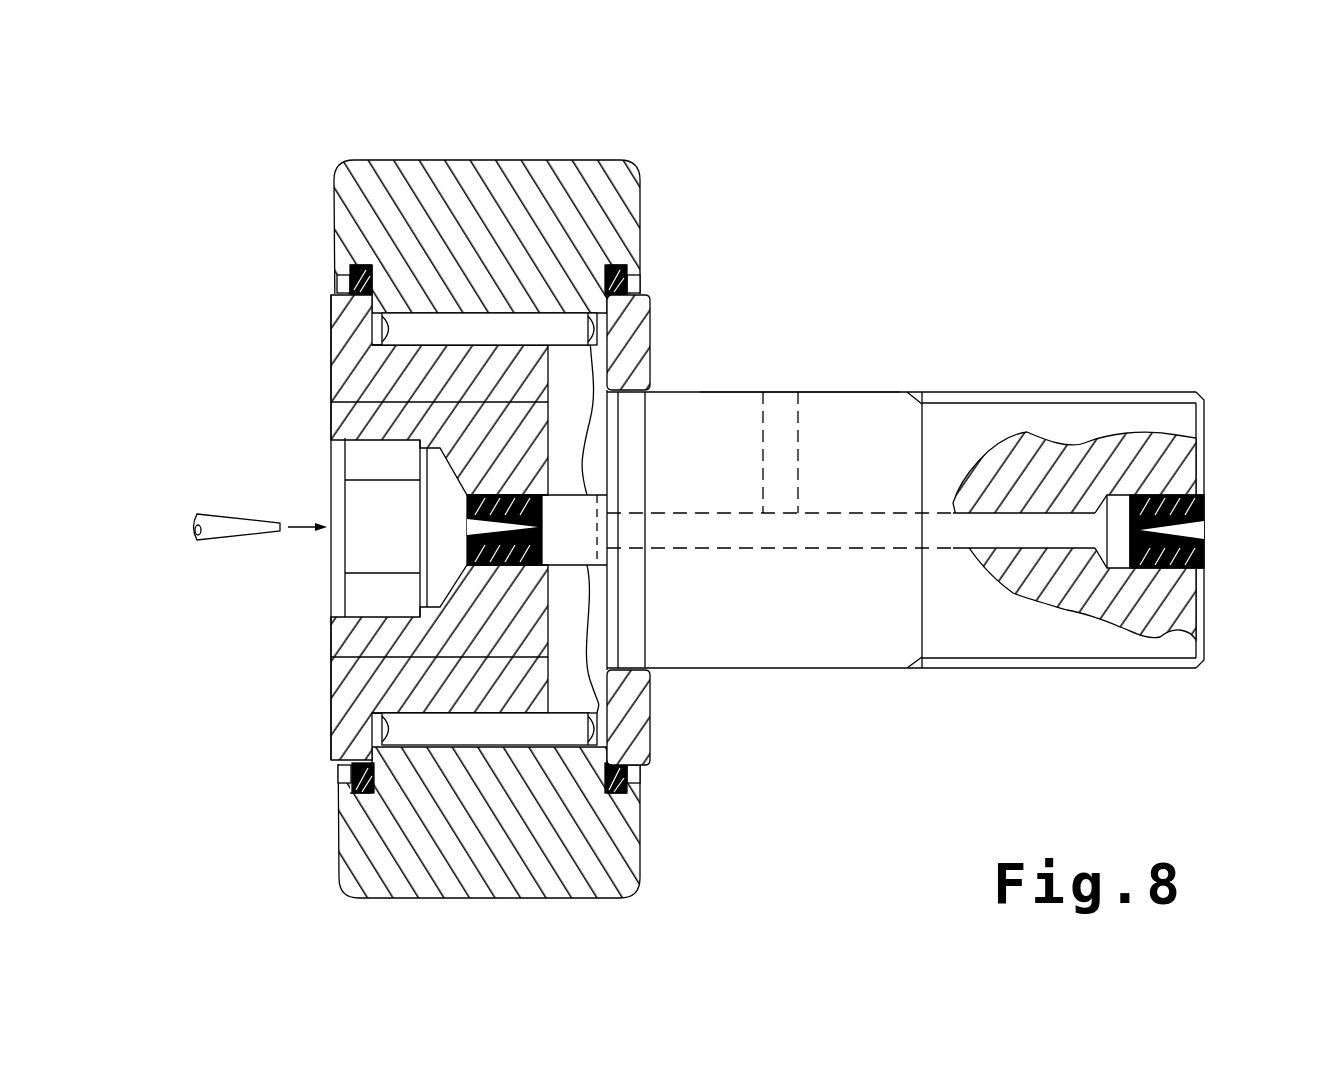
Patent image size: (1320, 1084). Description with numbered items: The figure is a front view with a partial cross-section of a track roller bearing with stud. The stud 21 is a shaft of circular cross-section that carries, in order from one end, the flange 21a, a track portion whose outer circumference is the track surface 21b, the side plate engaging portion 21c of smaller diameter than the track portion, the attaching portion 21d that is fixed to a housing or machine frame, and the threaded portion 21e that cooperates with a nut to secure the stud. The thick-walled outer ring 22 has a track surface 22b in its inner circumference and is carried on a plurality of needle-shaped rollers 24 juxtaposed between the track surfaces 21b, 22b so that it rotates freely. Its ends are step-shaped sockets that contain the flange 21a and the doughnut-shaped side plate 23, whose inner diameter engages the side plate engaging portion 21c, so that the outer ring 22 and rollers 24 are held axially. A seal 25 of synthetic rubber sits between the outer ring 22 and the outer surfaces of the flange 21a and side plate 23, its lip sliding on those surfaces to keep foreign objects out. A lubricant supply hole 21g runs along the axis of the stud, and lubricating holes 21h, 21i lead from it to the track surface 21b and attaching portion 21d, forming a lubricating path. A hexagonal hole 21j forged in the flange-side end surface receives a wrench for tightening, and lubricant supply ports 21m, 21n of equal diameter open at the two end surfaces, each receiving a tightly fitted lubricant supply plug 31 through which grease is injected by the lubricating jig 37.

The stud 21 is at (953, 377).
The flange 21a is at (340, 730).
The track surface 21b is at (505, 340).
The side plate engaging portion 21c is at (635, 430).
The attaching portion 21d is at (855, 423).
The threaded portion 21e is at (1085, 397).
The lubricant supply hole 21g is at (812, 542).
The lubricating hole 21h is at (554, 406).
The lubricating hole 21i is at (795, 423).
The hexagonal hole 21j is at (363, 617).
The lubricant supply port 21m is at (555, 567).
The lubricant supply port 21n is at (1118, 565).
The outer ring 22 is at (572, 205).
The track surface 22b is at (426, 318).
The side plate 23 is at (650, 310).
The needle-shaped rollers 24 is at (466, 330).
The seal 25 is at (356, 265).
The lubricant supply plug 31 is at (455, 511).
The lubricating jig 37 is at (230, 535).